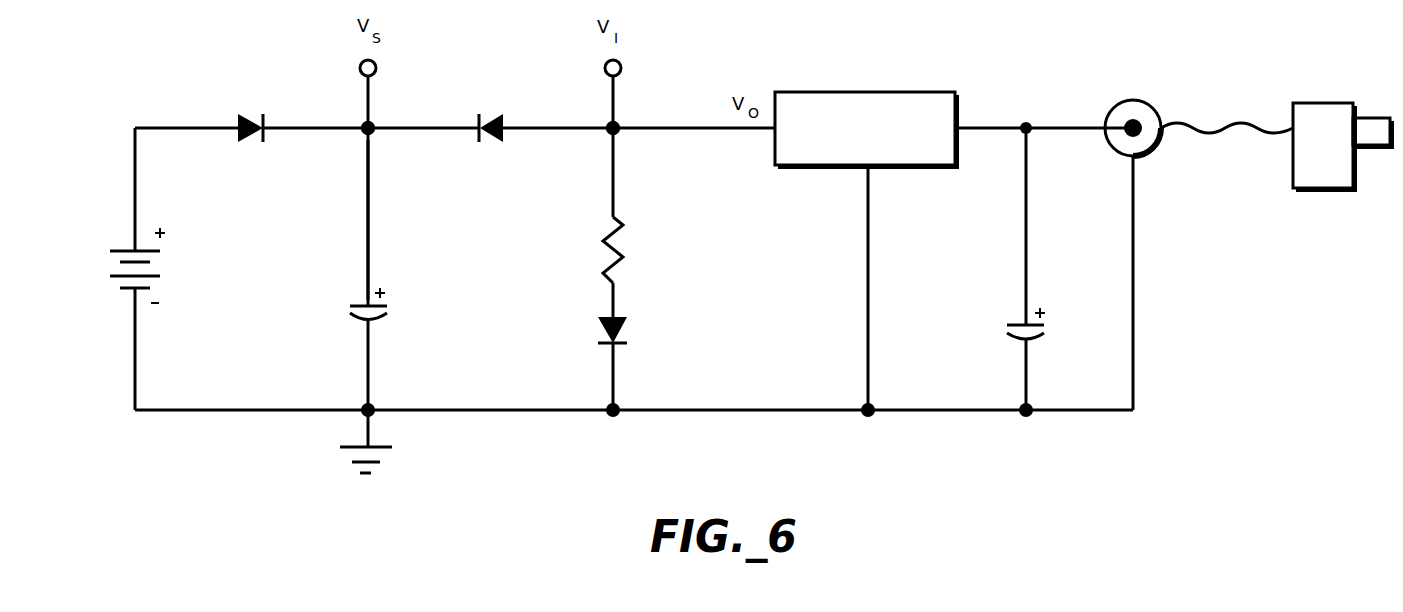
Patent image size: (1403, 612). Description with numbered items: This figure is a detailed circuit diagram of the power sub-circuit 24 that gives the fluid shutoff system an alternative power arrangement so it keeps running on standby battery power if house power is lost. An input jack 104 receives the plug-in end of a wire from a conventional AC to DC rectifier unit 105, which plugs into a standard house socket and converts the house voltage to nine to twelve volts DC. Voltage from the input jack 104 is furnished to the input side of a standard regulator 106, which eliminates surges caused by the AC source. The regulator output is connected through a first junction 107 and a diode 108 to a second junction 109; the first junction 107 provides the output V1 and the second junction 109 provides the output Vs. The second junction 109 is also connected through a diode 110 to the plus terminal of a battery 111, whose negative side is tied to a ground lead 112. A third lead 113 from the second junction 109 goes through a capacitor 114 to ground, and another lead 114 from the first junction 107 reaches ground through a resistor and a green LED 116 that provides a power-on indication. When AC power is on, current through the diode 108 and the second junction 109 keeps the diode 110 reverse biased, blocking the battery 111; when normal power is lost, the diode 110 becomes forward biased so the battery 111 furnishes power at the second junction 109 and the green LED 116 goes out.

The power sub-circuit 24 is at (897, 91).
The input jack 104 is at (1137, 103).
The AC to DC rectifier unit 105 is at (1313, 190).
The regulator 106 is at (886, 137).
The first junction 107 is at (618, 123).
The diode 108 is at (503, 122).
The second junction 109 is at (372, 123).
The diode 110 is at (241, 113).
The battery 111 is at (115, 250).
The ground lead 112 is at (183, 410).
The third lead 113 is at (367, 218).
The capacitor 114 is at (383, 312).
The green LED 116 is at (620, 332).